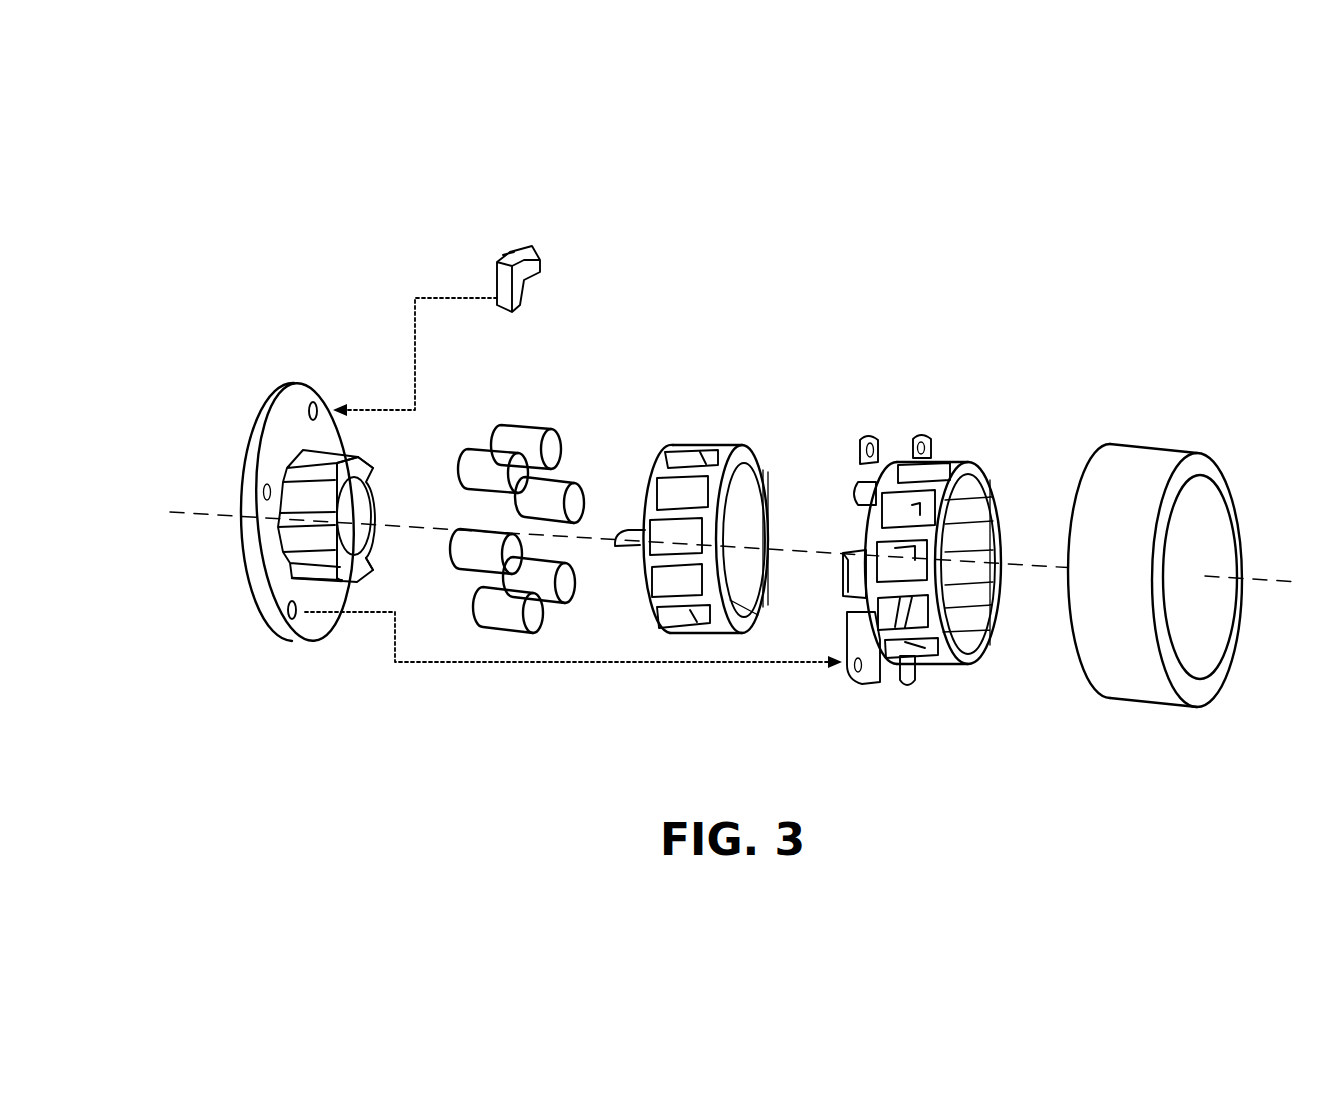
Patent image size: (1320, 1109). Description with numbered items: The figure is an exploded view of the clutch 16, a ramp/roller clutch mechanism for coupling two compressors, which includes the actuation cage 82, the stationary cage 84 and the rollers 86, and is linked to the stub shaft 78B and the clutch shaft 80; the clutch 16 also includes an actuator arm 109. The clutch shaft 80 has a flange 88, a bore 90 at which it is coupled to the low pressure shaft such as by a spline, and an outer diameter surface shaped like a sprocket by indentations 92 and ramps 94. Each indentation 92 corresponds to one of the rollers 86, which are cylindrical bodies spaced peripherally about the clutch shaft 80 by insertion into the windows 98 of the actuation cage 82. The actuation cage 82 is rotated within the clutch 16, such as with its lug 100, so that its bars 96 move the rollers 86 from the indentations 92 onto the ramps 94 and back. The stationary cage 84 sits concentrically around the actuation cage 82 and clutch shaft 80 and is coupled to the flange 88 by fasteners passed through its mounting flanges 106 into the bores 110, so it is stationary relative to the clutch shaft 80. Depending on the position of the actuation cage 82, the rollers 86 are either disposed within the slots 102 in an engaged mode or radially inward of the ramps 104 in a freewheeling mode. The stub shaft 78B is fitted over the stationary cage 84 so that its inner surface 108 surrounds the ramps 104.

The clutch 16 is at (871, 203).
The stub shaft 78B is at (1155, 505).
The clutch shaft 80 is at (296, 559).
The actuation cage 82 is at (701, 477).
The stationary cage 84 is at (933, 535).
The rollers 86 is at (568, 405).
The flange 88 is at (283, 415).
The bore 90 is at (357, 537).
The indentations 92 is at (293, 510).
The ramps 94 is at (293, 478).
The bars 96 is at (655, 556).
The windows 98 is at (672, 452).
The lug 100 is at (618, 541).
The slots 102 is at (918, 654).
The ramps 104 is at (883, 535).
The mounting flanges 106 is at (862, 685).
The inner surface 108 is at (1223, 562).
The actuator arm 109 is at (540, 262).
The bores 110 is at (338, 412).